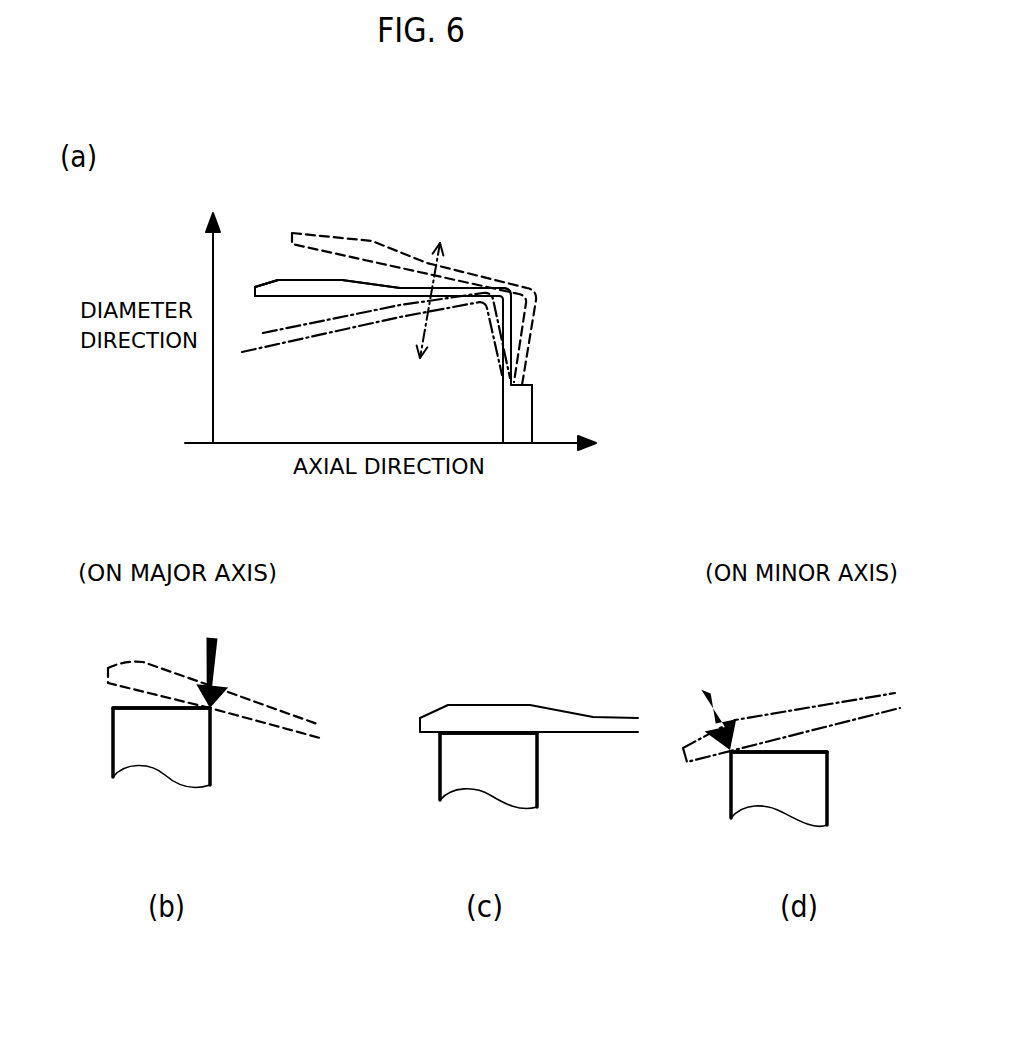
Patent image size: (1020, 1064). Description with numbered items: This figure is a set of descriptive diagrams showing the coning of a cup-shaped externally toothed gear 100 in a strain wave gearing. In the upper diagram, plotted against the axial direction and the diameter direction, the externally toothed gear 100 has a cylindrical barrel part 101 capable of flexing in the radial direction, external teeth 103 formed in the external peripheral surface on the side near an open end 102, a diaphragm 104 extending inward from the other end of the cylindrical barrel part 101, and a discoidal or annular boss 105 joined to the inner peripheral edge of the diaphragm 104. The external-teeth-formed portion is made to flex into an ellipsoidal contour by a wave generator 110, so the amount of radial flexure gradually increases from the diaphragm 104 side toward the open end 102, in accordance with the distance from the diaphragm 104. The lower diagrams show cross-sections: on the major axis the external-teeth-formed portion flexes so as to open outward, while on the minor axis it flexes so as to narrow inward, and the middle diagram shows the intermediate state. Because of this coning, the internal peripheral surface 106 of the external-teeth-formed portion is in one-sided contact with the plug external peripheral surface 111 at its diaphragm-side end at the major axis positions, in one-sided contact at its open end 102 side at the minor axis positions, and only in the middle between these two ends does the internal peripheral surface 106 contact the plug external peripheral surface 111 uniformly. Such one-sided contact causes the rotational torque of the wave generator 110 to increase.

The externally toothed gear 100 is at (353, 269).
The cylindrical barrel part 101 is at (402, 295).
The open end 102 is at (260, 286).
The external teeth 103 is at (311, 288).
The diaphragm 104 is at (509, 323).
The boss 105 is at (522, 412).
The internal peripheral surface 106 is at (292, 298).
The wave generator 110 is at (98, 749).
The plug external peripheral surface 111 is at (135, 707).